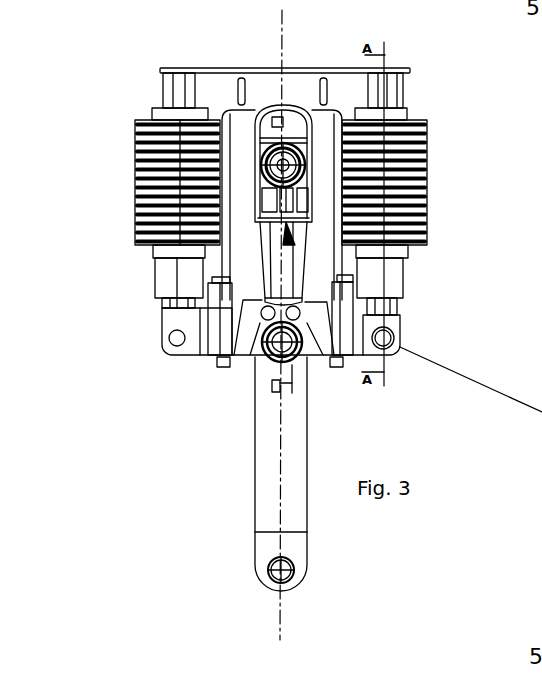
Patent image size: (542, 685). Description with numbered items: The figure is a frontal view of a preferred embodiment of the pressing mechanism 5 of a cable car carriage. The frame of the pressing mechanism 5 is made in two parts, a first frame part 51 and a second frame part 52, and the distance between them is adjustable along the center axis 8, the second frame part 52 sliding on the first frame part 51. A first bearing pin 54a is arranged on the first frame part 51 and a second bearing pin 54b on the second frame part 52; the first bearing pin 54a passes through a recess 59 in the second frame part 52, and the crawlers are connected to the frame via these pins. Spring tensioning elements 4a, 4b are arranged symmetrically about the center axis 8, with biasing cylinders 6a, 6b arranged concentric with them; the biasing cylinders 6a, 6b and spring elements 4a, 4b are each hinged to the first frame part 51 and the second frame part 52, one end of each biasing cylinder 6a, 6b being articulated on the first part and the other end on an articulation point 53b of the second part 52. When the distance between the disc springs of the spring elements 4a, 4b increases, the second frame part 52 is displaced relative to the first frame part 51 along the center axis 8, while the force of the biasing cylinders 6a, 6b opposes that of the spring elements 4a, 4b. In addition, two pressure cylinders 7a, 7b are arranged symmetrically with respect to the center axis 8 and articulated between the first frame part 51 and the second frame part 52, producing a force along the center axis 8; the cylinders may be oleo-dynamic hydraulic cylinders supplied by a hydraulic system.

The center axis 8 is at (281, 43).
The recess 59 is at (306, 157).
The first frame part 51 is at (267, 130).
The first bearing pin 54a is at (256, 165).
The second bearing pin 54b is at (298, 355).
The spring tensioning element 4a is at (130, 170).
The spring tensioning element 4b is at (438, 153).
The biasing cylinder 6a is at (175, 280).
The biasing cylinder 6b is at (391, 292).
The pressure cylinder 7a is at (268, 245).
The pressure cylinder 7b is at (342, 284).
The pressing mechanism 5 is at (187, 385).
The second frame part 52 is at (246, 296).
The articulation point 53b is at (398, 87).